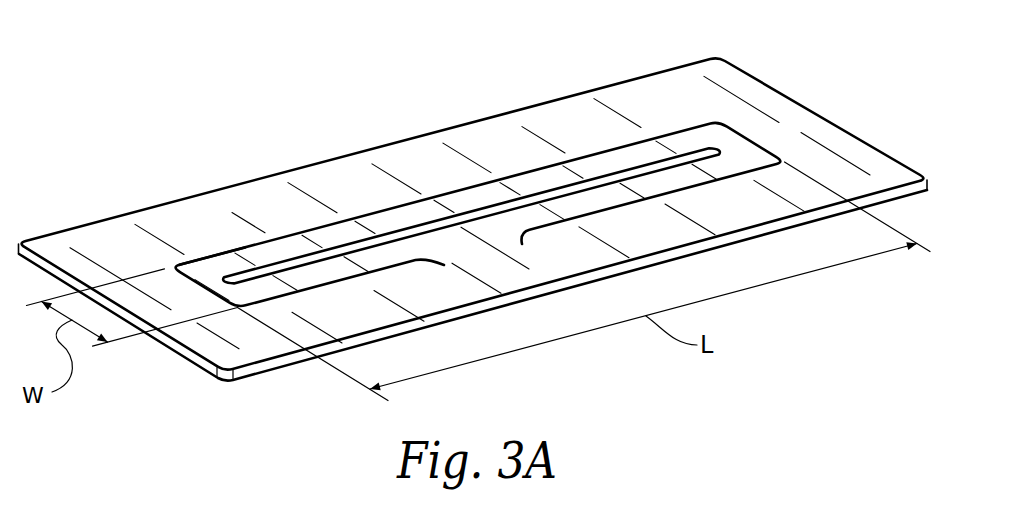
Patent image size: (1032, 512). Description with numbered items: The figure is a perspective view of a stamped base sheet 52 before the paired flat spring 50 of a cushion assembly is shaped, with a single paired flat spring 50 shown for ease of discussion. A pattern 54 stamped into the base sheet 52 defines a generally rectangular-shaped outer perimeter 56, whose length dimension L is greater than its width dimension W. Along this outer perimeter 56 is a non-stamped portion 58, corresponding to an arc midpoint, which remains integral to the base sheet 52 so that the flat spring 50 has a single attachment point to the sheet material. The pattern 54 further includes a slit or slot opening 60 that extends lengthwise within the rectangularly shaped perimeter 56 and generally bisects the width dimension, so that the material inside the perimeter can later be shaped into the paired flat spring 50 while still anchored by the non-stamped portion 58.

The paired flat spring 50 is at (235, 82).
The base sheet 52 is at (800, 100).
The pattern 54 is at (597, 145).
The generally rectangular-shaped outer perimeter 56 is at (283, 240).
The non-stamped portion 58 is at (490, 256).
The slot opening 60 is at (478, 217).